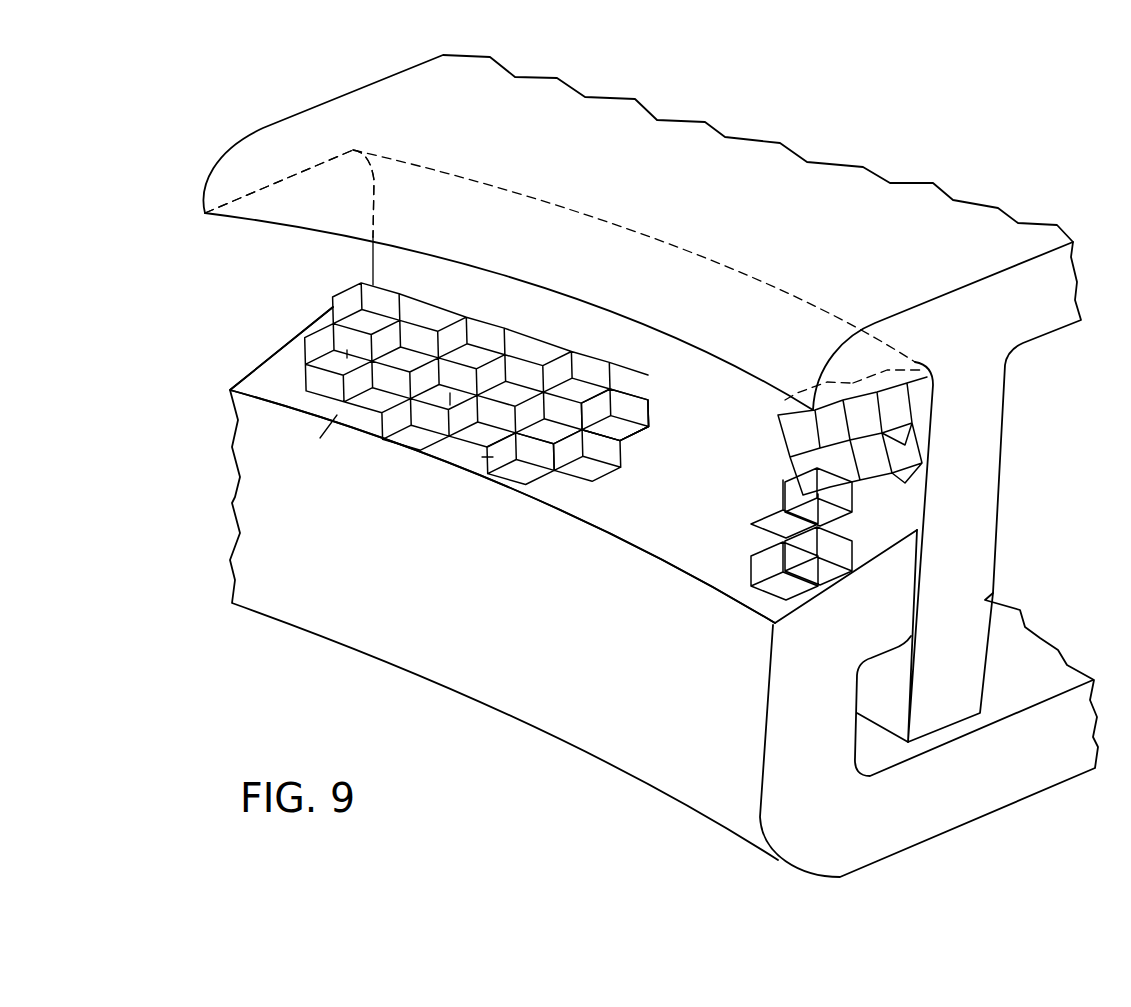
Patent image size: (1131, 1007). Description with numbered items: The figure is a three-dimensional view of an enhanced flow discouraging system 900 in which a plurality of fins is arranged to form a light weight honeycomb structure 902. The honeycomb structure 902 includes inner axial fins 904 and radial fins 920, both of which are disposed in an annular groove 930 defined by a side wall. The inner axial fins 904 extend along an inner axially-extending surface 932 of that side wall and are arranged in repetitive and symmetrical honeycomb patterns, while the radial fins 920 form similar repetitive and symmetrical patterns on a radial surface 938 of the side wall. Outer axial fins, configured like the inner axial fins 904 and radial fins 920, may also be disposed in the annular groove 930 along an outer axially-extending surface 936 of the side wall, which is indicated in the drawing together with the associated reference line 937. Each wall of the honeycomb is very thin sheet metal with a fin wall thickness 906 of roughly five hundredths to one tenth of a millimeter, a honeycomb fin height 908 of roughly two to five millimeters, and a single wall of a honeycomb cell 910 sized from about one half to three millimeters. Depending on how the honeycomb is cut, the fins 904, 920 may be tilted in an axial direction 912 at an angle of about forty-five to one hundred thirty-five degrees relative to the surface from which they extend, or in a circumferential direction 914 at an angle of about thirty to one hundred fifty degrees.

The enhanced flow discouraging system 900 is at (835, 176).
The honeycomb structure 902 is at (463, 375).
The inner axial fins 904 is at (562, 460).
The fin wall thickness 906 is at (630, 443).
The honeycomb fin height 908 is at (651, 442).
The honeycomb cell 910 is at (542, 440).
The axial direction 912 is at (343, 360).
The circumferential direction 914 is at (465, 402).
The radial fins 920 is at (907, 467).
The annular groove 930 is at (207, 225).
The inner axially-extending surface 932 is at (272, 355).
The outer axially-extending surface 936 is at (300, 173).
The direction of surface extent 937 is at (374, 203).
The radial surface 938 is at (772, 326).